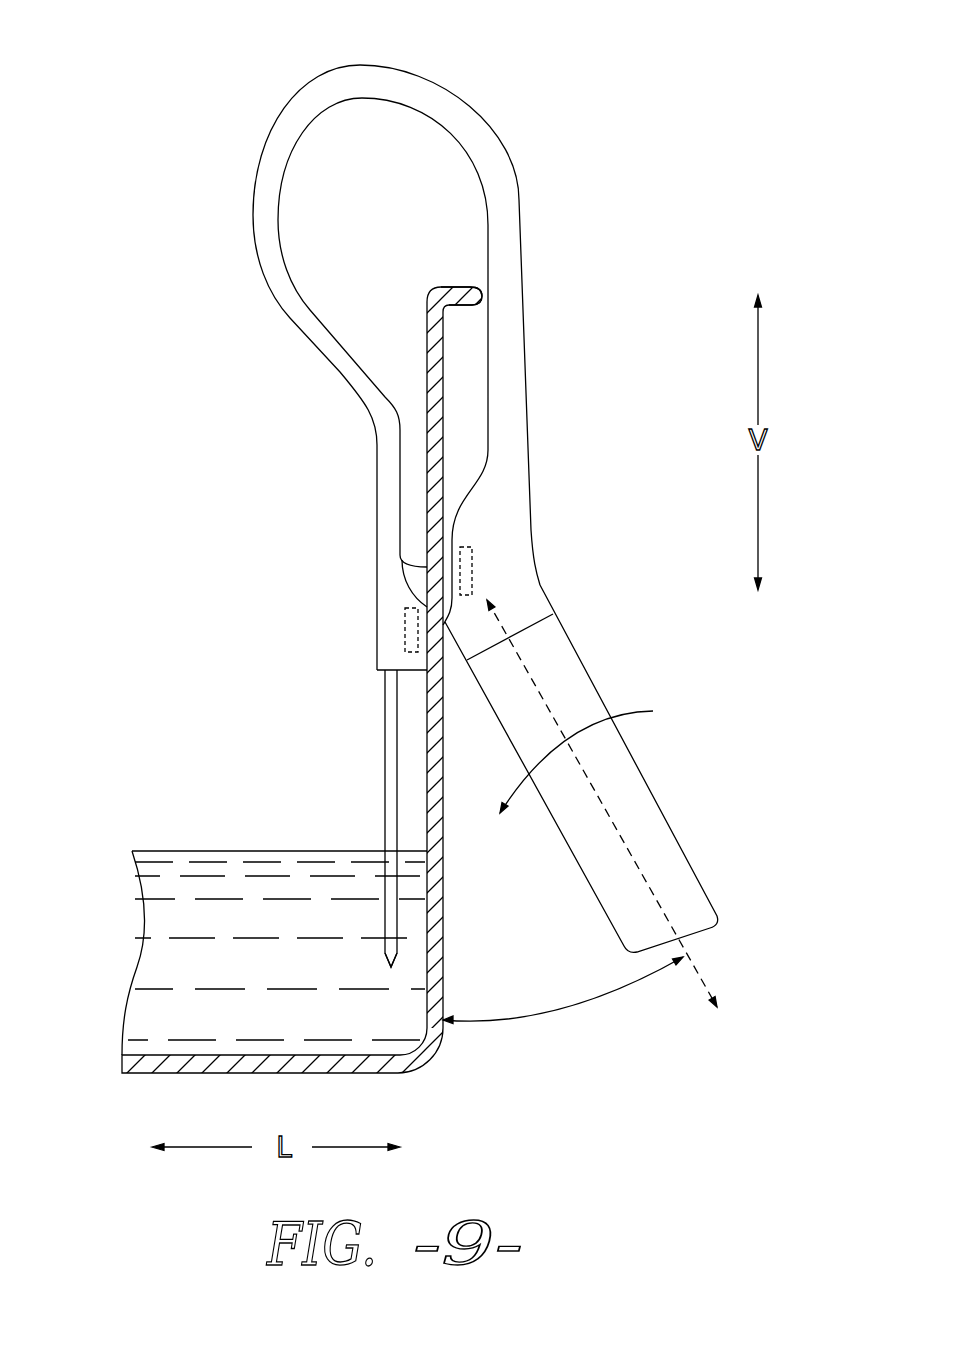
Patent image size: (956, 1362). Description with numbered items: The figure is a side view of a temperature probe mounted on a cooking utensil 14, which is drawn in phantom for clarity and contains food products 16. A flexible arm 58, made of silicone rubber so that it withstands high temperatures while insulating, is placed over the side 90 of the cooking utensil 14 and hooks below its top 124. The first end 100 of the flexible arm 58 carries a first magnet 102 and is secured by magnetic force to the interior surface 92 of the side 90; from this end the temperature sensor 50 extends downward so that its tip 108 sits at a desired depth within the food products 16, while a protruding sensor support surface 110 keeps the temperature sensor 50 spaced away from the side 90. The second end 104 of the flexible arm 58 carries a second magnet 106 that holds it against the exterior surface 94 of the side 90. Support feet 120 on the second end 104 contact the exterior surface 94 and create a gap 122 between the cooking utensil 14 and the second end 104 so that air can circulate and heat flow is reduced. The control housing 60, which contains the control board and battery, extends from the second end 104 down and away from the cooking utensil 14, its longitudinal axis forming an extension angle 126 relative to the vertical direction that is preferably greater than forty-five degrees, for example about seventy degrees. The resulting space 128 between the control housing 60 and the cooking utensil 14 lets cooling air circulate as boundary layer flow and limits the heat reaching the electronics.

The cooking utensil 14 is at (408, 1060).
The food products 16 is at (167, 957).
The temperature sensor 50 is at (392, 788).
The flexible arm 58 is at (360, 85).
The control housing 60 is at (640, 817).
The side 90 is at (435, 322).
The interior surface 92 is at (425, 357).
The exterior surface 94 is at (447, 398).
The first end 100 is at (377, 632).
The first magnet 102 is at (403, 617).
The second end 104 is at (540, 568).
The second magnet 106 is at (470, 560).
The tip 108 is at (380, 963).
The protruding sensor support surface 110 is at (427, 658).
The support feet 120 is at (450, 618).
The gap 122 is at (443, 567).
The top 124 is at (462, 283).
The extension angle 126 is at (553, 1010).
The space 128 is at (610, 757).